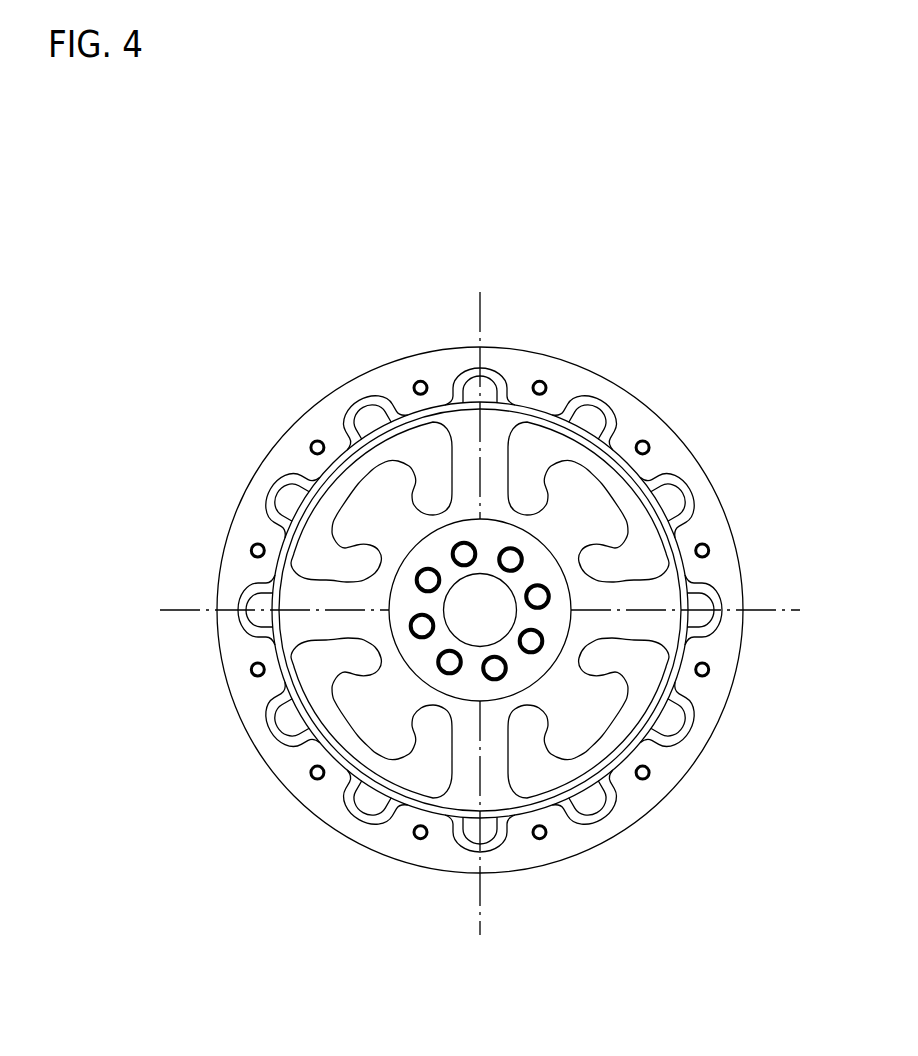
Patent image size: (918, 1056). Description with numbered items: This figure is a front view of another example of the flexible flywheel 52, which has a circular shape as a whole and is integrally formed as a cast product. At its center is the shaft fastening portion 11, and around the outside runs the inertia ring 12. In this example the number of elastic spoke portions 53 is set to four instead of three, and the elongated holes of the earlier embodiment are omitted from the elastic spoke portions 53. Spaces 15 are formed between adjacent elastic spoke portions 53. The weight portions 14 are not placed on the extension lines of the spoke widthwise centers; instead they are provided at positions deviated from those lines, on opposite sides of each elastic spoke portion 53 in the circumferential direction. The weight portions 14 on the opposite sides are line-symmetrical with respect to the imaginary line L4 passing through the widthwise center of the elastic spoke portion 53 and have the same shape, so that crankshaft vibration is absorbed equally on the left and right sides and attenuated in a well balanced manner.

The shaft fastening portion 11 is at (557, 611).
The inertia ring 12 is at (292, 428).
The weight portions 14 is at (348, 473).
The spaces 15 is at (310, 503).
The flexible flywheel 52 is at (695, 395).
The elastic spoke portions 53 is at (510, 458).
The imaginary line L4 is at (482, 323).